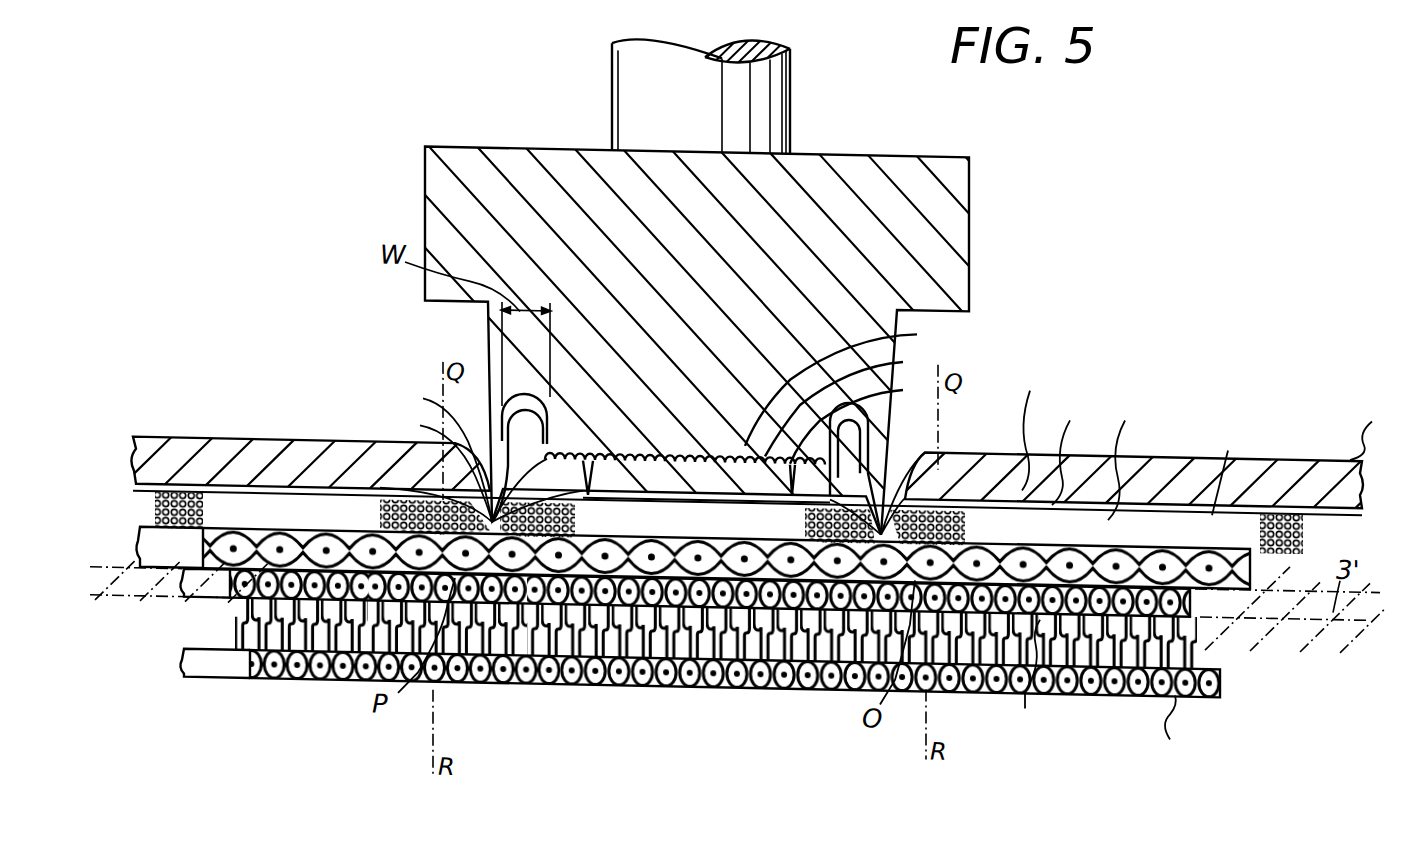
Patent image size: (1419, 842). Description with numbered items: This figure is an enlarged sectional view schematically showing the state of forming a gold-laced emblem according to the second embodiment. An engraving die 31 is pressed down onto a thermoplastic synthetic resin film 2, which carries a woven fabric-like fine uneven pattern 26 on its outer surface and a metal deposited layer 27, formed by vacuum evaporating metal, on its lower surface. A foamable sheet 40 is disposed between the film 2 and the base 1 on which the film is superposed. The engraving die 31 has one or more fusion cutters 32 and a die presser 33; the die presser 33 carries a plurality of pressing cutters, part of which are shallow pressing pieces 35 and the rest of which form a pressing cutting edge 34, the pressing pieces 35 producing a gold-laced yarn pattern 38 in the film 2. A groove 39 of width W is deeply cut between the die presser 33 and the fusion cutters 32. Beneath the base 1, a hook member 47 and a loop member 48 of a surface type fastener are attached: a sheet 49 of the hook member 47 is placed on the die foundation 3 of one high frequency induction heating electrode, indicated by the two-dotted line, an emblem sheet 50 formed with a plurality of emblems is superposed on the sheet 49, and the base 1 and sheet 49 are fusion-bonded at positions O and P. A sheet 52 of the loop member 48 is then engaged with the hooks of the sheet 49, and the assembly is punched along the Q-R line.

The engraving die 31 is at (947, 207).
The groove 39 is at (505, 372).
The die presser 33 is at (849, 380).
The gold-laced yarn pattern 38 is at (851, 399).
The pressing piece 35 is at (863, 418).
The thermoplastic synthetic resin film 2 is at (988, 454).
The woven fabric-like fine uneven pattern 26 is at (1042, 425).
The metal deposited layer 27 is at (1074, 449).
The foamable sheet 40 is at (729, 464).
The base 1 is at (1227, 466).
The emblem sheet 50 is at (1375, 428).
The fusion cutter 32 is at (469, 450).
The pressing cutting edge 34 is at (481, 466).
The sheet of the hook member 49 is at (1200, 593).
The die foundation 3 is at (1308, 568).
The hook member 47 is at (716, 670).
The loop member 48 is at (1105, 683).
The sheet of the loop member 52 is at (1162, 732).